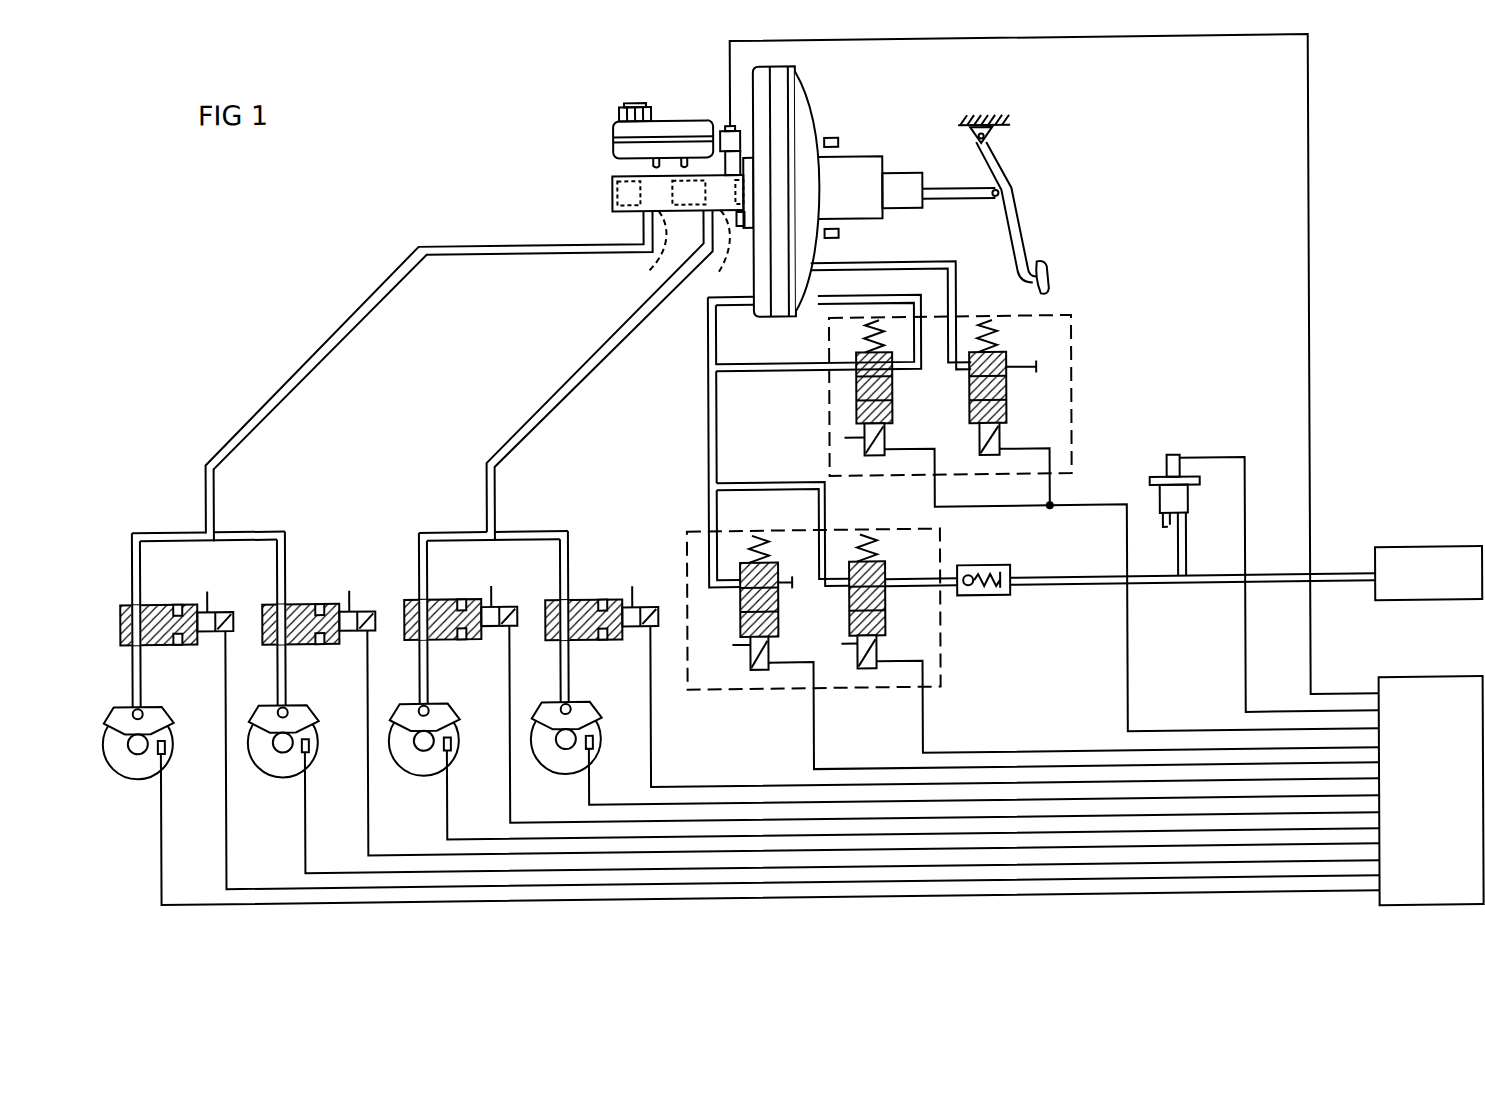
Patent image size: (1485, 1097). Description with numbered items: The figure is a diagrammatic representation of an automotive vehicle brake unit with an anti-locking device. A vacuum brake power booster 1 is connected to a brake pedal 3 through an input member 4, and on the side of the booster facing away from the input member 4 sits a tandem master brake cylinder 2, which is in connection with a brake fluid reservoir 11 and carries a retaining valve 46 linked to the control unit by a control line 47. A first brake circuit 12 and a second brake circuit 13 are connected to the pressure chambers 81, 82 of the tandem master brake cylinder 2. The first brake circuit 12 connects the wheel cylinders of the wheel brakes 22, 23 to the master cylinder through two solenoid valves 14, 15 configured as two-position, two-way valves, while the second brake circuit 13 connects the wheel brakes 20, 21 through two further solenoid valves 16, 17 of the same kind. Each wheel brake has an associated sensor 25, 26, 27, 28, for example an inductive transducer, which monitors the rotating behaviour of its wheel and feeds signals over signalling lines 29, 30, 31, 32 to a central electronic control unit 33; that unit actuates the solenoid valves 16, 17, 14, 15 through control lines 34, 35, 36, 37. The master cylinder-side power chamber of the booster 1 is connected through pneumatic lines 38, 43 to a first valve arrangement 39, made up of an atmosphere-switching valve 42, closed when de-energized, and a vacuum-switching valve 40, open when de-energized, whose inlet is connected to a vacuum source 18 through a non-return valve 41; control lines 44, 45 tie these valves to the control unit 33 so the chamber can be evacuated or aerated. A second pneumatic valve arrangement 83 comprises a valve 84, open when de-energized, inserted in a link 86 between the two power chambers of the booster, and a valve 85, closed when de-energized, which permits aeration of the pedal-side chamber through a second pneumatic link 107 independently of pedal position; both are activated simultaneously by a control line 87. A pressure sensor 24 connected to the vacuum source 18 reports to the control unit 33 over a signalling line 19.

The vacuum brake power booster 1 is at (828, 99).
The tandem master brake cylinder 2 is at (606, 188).
The brake pedal 3 is at (1050, 281).
The input member 4 is at (945, 191).
The brake fluid reservoir 11 is at (618, 124).
The first brake circuit 12 is at (526, 427).
The second brake circuit 13 is at (234, 431).
The solenoid valve 14 is at (452, 596).
The solenoid valve 15 is at (595, 598).
The solenoid valve 16 is at (166, 598).
The solenoid valve 17 is at (312, 599).
The vacuum source 18 is at (1390, 556).
The signalling line 19 is at (1245, 532).
The wheel brake 20 is at (153, 703).
The wheel brake 21 is at (297, 704).
The wheel brake 22 is at (438, 703).
The wheel brake 23 is at (580, 704).
The pressure sensor 24 is at (1186, 502).
The sensor 25 is at (164, 740).
The sensor 26 is at (308, 741).
The sensor 27 is at (450, 742).
The sensor 28 is at (592, 744).
The signalling line 29 is at (161, 870).
The signalling line 30 is at (305, 836).
The signalling line 31 is at (447, 798).
The signalling line 32 is at (589, 770).
The central electronic control unit 33 is at (1437, 686).
The control line 34 is at (226, 856).
The control line 35 is at (368, 820).
The control line 36 is at (510, 797).
The control line 37 is at (651, 746).
The pneumatic line 38 is at (709, 438).
The first valve arrangement 39 is at (942, 660).
The 2/2-way valve 40 is at (855, 590).
The non-return valve 41 is at (983, 598).
The 2/2-way valve 42 is at (746, 590).
The pneumatic line 43 is at (1053, 590).
The control line 44 is at (925, 710).
The control line 45 is at (816, 712).
The retaining valve 46 is at (726, 128).
The control line 47 is at (1090, 41).
The pressure chamber 81 is at (727, 250).
The pressure chamber 82 is at (652, 268).
The second pneumatic valve arrangement 83 is at (1072, 378).
The 2/2-way valve 84 is at (893, 416).
The 2/2-way valve 85 is at (1007, 416).
The link 86 is at (763, 371).
The control line 87 is at (1127, 672).
The second pneumatic link 107 is at (914, 264).